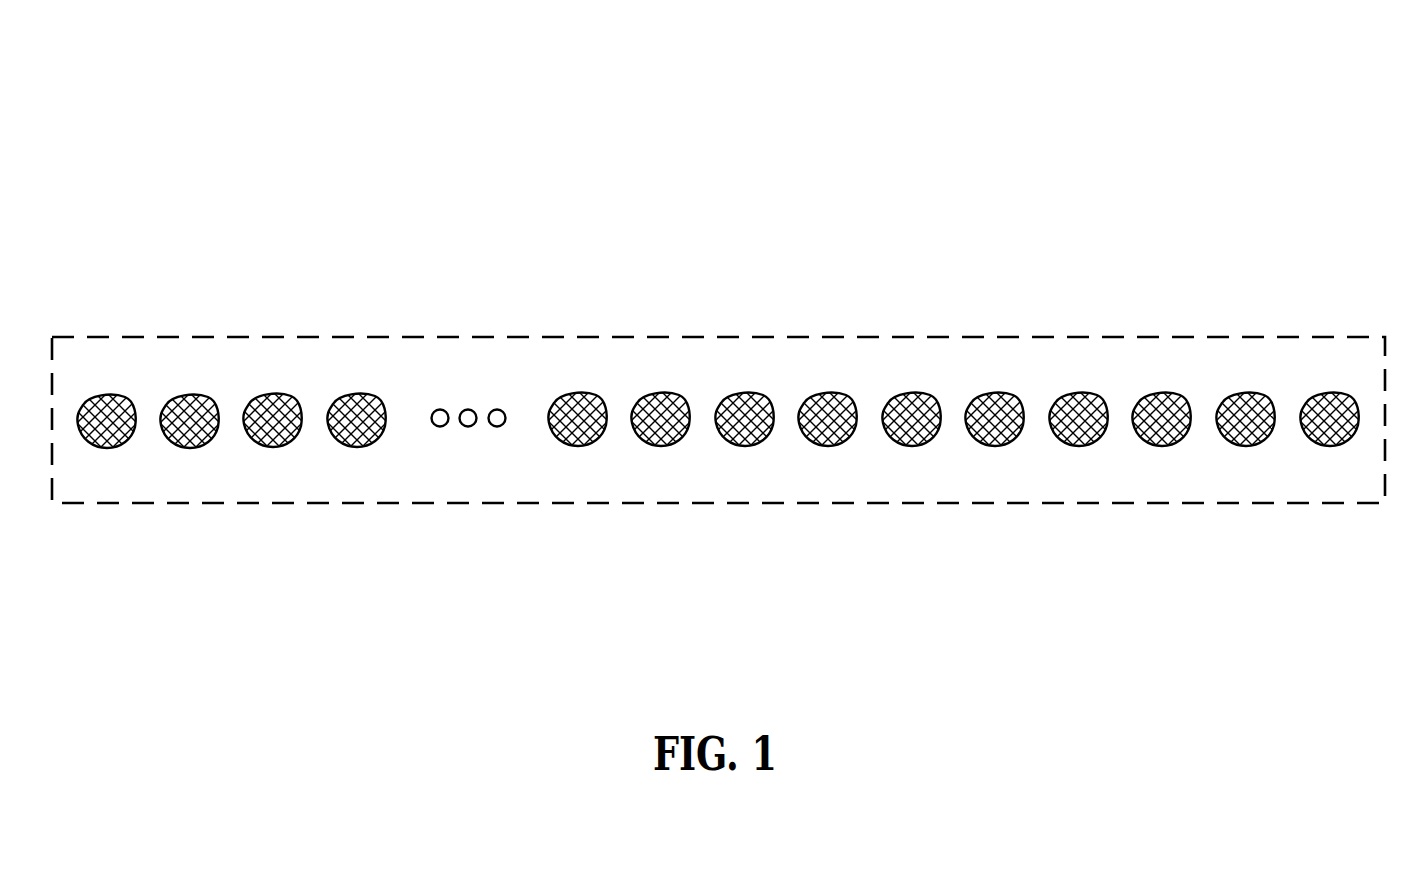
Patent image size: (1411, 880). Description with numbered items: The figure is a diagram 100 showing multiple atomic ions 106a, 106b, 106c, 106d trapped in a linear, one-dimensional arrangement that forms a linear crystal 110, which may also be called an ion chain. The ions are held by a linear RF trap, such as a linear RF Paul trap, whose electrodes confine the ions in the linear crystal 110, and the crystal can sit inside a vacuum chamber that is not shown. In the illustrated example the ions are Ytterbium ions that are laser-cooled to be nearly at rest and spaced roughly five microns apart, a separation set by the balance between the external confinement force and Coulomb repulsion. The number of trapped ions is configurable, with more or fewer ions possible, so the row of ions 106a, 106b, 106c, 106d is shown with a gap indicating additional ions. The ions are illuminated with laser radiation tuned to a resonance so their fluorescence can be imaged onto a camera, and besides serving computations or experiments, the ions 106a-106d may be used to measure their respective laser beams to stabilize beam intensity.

The diagram 100 is at (212, 92).
The linear crystal 110 is at (782, 326).
The atomic ion 106a is at (140, 397).
The atomic ion 106b is at (220, 397).
The atomic ion 106c is at (1274, 392).
The atomic ion 106d is at (1355, 391).